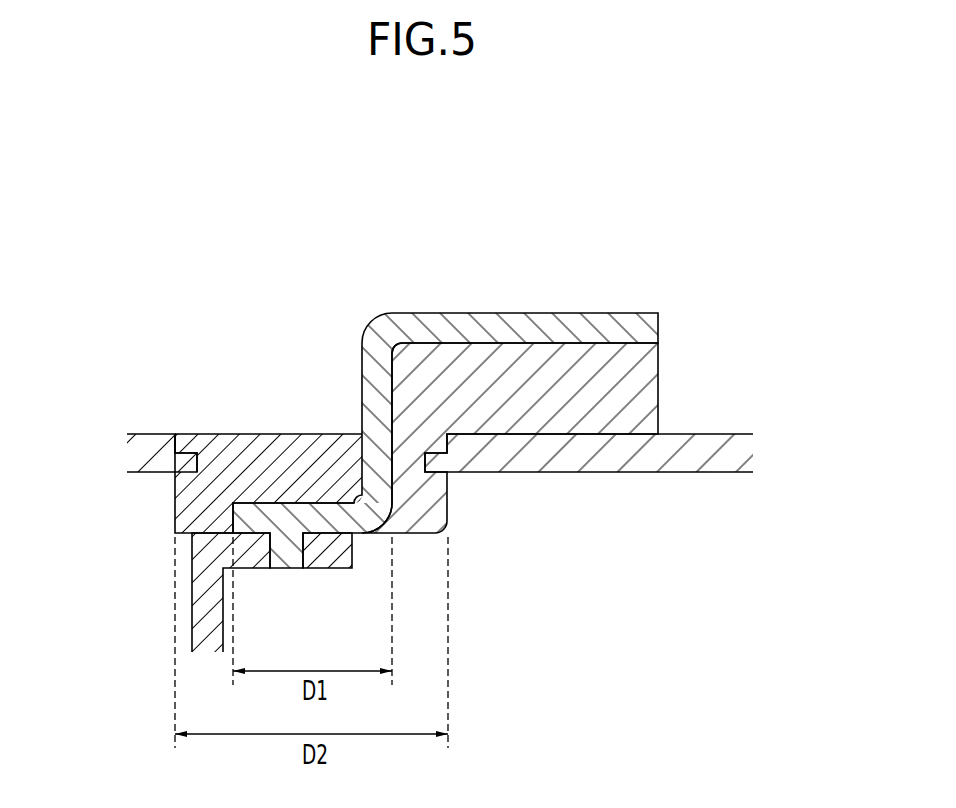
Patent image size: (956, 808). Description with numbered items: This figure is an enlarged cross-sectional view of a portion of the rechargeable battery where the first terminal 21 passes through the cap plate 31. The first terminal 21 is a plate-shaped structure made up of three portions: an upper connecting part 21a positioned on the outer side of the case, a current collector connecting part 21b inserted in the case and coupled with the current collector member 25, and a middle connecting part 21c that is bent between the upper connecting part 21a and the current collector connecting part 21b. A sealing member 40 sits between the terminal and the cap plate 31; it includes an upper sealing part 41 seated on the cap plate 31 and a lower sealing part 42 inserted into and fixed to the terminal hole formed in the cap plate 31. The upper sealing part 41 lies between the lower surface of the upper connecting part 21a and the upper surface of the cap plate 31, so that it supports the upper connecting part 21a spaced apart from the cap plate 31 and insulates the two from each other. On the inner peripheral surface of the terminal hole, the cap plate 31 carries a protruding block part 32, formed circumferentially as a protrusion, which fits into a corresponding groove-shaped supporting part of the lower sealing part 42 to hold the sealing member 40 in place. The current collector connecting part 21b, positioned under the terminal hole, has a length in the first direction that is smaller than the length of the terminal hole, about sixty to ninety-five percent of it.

The first terminal 21 is at (445, 385).
The upper connecting part 21a is at (570, 322).
The current collector connecting part 21b is at (312, 520).
The middle connecting part 21c is at (375, 393).
The current collector member 25 is at (207, 600).
The cap plate 31 is at (603, 452).
The block part 32 is at (190, 442).
The sealing member 40 is at (244, 485).
The upper sealing part 41 is at (638, 385).
The lower sealing part 42 is at (248, 460).